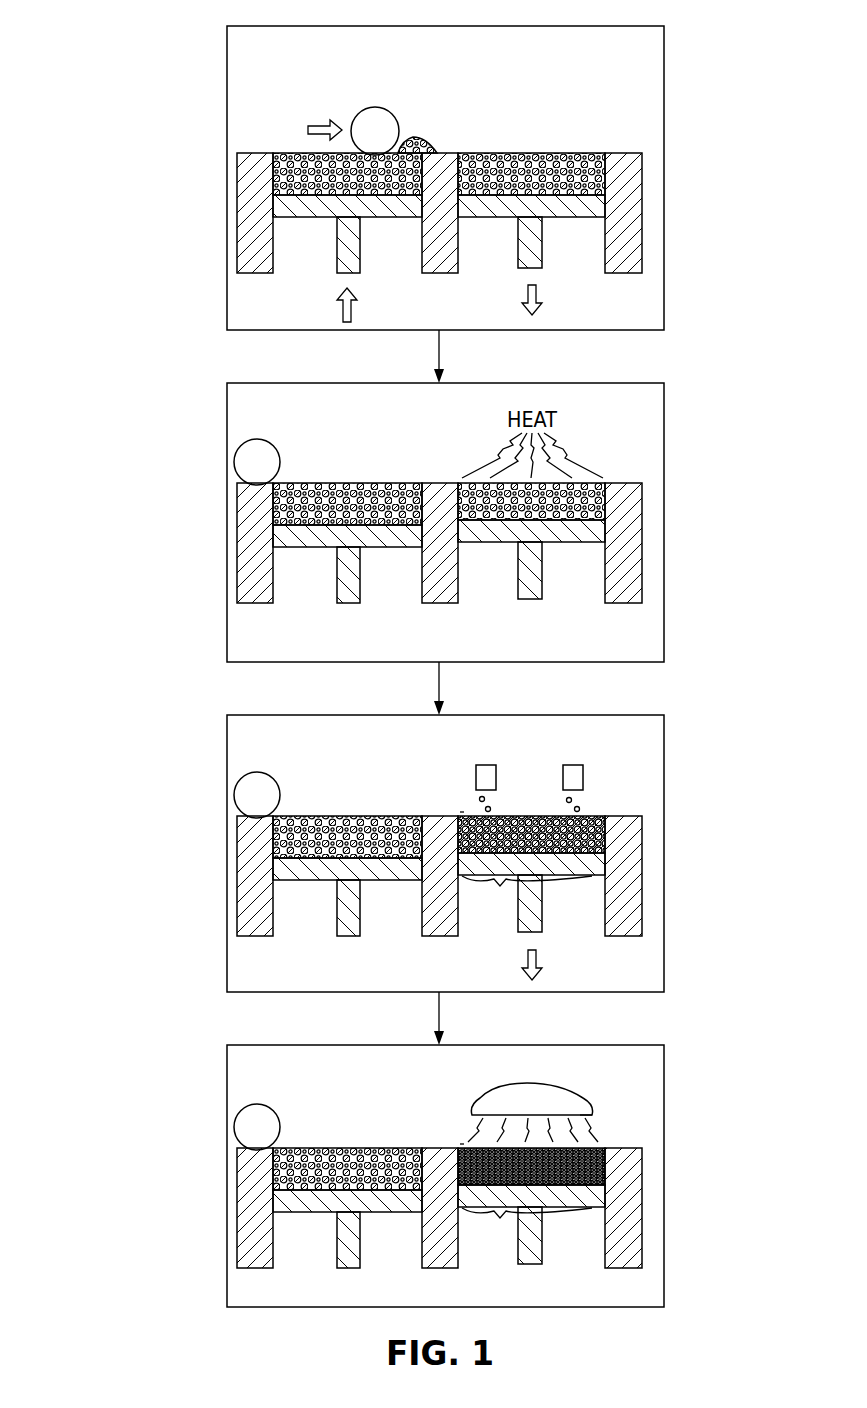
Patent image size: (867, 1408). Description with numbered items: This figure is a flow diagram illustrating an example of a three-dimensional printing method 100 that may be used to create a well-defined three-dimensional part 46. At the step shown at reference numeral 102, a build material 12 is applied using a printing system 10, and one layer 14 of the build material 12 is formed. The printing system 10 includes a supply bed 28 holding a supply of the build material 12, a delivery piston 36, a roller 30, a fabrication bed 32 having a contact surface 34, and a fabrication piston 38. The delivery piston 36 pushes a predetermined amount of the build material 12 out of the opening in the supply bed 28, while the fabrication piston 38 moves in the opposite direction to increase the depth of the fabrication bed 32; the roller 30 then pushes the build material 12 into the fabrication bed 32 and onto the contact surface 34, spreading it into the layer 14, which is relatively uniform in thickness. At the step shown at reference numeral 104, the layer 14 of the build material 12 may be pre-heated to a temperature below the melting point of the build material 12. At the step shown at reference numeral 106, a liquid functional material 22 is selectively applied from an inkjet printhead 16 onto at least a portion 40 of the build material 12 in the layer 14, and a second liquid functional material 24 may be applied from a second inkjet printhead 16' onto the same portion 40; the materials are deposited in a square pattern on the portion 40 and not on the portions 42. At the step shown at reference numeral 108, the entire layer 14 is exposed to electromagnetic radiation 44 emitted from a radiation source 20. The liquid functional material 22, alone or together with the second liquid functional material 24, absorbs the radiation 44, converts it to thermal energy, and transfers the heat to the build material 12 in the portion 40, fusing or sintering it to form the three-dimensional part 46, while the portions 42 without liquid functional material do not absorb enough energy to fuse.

The 3D printing method 100 is at (126, 62).
The printing system 10 is at (341, 78).
The build material 12 is at (300, 153).
The layer 14 is at (582, 478).
The inkjet printhead 16 is at (516, 762).
The inkjet printhead 16' is at (604, 762).
The radiation source 20 is at (530, 1095).
The liquid functional material 22 is at (491, 809).
The second liquid functional material 24 is at (581, 145).
The supply bed 28 is at (275, 153).
The roller 30 is at (377, 131).
The fabrication bed 32 is at (472, 153).
The contact surface 34 is at (598, 183).
The delivery piston 36 is at (348, 265).
The fabrication piston 38 is at (532, 256).
The portion 40 is at (527, 1062).
The portions 42 is at (462, 808).
The electromagnetic radiation 44 is at (583, 1120).
The 3D part 46 is at (494, 1130).
The applying a build material 102 is at (664, 177).
The heating 104 is at (664, 522).
The selectively applying the liquid functional material 106 is at (664, 853).
The exposing to electromagnetic radiation 108 is at (664, 1175).